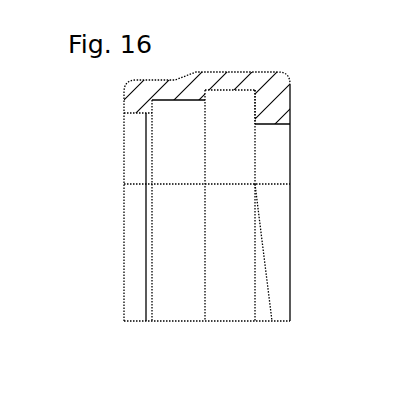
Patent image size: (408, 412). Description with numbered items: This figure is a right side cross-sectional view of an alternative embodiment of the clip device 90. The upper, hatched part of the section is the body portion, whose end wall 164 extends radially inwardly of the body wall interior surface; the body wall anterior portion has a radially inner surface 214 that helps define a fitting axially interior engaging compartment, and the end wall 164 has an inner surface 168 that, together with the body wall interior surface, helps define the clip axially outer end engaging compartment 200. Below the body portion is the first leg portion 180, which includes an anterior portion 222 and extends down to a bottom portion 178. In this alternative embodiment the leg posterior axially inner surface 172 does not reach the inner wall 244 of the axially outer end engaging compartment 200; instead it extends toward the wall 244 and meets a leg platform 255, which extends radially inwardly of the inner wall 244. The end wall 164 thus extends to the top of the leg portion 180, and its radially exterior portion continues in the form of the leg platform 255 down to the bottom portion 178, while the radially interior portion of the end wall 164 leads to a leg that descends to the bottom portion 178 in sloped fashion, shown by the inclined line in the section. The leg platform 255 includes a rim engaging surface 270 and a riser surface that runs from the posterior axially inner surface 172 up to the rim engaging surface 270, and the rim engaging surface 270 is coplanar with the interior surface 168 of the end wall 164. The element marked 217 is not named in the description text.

The clip device 90 is at (307, 58).
The end wall 164 is at (277, 102).
The body wall anterior portion radially inner surface 214 is at (177, 103).
The inner lip 217 is at (147, 113).
The end wall inner surface 168 is at (250, 132).
The clip axially outer end engaging compartment 200 is at (210, 198).
The inner wall 244 is at (210, 253).
The rim engaging surface 270 is at (253, 263).
The leg platform 255 is at (257, 293).
The posterior axially inner surface 172 is at (268, 305).
The anterior portion 222 is at (183, 338).
The first leg portion 180 is at (308, 287).
The bottom portion 178 is at (298, 325).